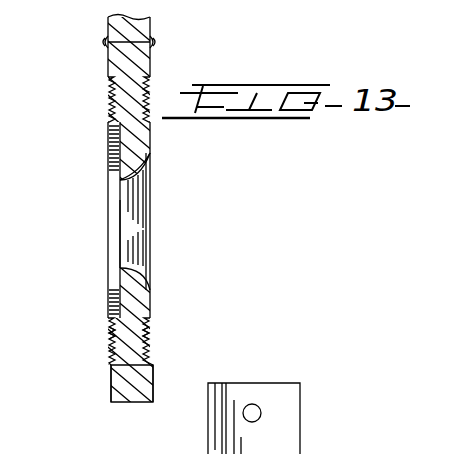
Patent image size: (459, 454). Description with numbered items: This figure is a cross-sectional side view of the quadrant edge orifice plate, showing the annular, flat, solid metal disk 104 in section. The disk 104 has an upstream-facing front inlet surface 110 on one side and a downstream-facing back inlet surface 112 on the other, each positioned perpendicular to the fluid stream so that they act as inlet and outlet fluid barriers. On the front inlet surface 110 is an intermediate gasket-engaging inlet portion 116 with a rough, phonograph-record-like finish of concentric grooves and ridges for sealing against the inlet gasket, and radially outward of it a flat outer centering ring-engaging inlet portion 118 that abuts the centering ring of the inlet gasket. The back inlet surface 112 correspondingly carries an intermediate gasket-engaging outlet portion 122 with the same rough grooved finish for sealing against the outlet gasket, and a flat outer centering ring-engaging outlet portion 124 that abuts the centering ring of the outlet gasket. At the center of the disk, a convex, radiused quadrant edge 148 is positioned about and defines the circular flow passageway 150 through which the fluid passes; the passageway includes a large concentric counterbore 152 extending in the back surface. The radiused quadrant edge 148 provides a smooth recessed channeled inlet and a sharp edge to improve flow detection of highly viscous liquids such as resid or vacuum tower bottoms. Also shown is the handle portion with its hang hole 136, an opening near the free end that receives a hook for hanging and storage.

The disk 104 is at (130, 402).
The front inlet surface 110 is at (108, 60).
The back inlet surface 112 is at (150, 59).
The intermediate gasket-engaging inlet portion 116 is at (110, 341).
The outer centering ring-engaging inlet portion 118 is at (111, 380).
The intermediate gasket-engaging outlet portion 122 is at (150, 334).
The outer centering ring-engaging outlet portion 124 is at (153, 376).
The hang hole 136 is at (261, 413).
The quadrant edge 148 is at (118, 182).
The flow passageway 150 is at (120, 228).
The counterbore 152 is at (108, 150).